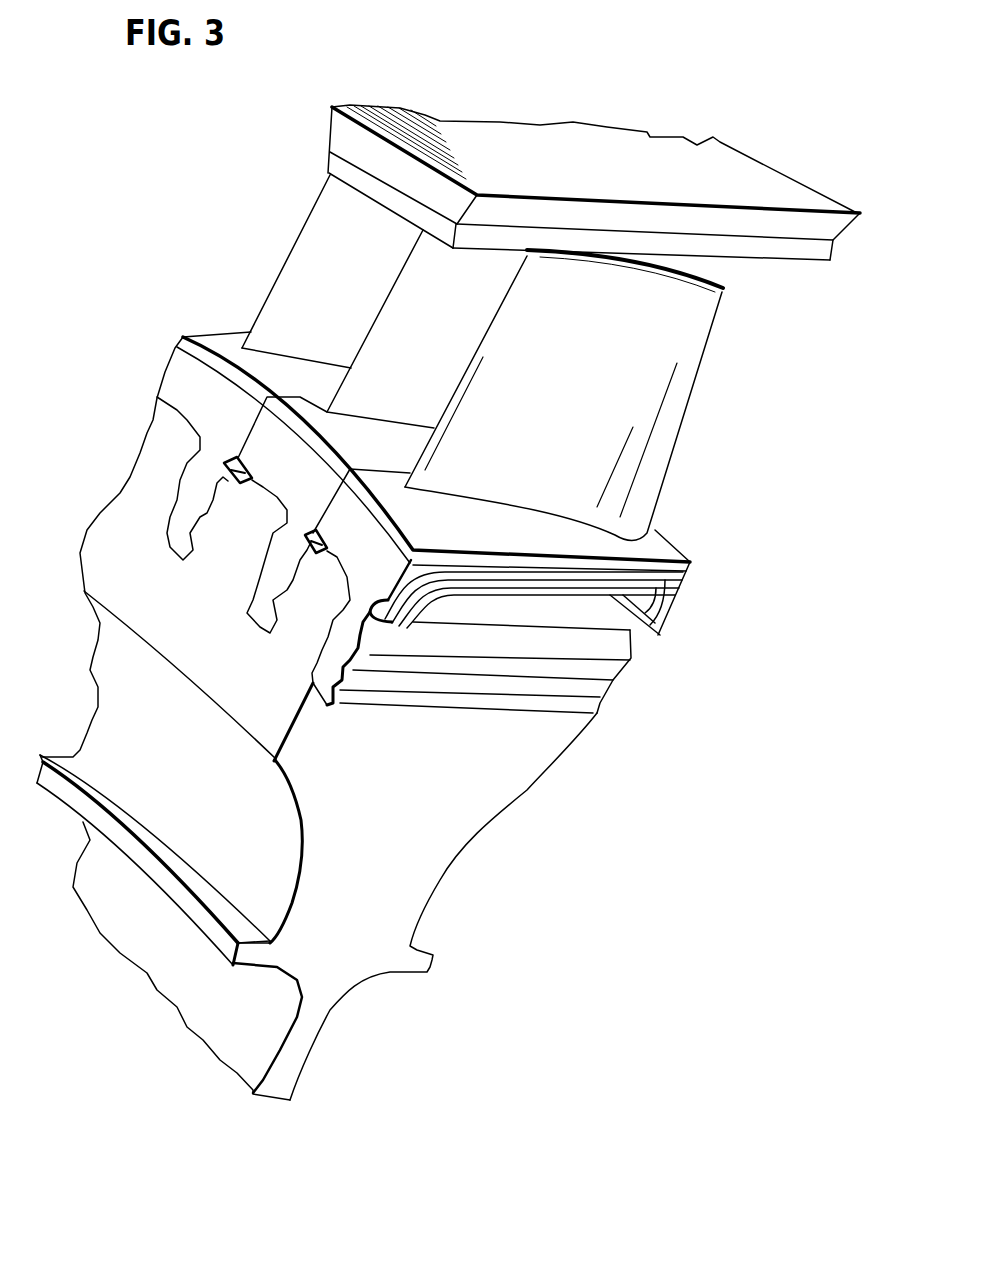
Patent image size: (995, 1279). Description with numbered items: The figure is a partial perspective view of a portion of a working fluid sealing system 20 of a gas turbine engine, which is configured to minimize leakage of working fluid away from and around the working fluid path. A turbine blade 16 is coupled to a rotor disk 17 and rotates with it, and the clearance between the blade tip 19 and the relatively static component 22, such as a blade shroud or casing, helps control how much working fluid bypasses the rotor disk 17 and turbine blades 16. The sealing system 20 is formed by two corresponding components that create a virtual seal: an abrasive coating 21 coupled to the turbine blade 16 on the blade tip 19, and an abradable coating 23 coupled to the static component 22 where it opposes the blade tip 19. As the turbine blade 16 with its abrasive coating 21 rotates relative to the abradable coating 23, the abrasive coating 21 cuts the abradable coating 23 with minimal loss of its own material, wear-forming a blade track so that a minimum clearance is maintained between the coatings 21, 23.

The turbine blade 16 is at (302, 285).
The rotor disk 17 is at (415, 906).
The blade tip 19 is at (722, 290).
The working fluid sealing system 20 is at (776, 126).
The abrasive coating 21 is at (702, 268).
The static component 22 is at (327, 140).
The abradable coating 23 is at (402, 200).